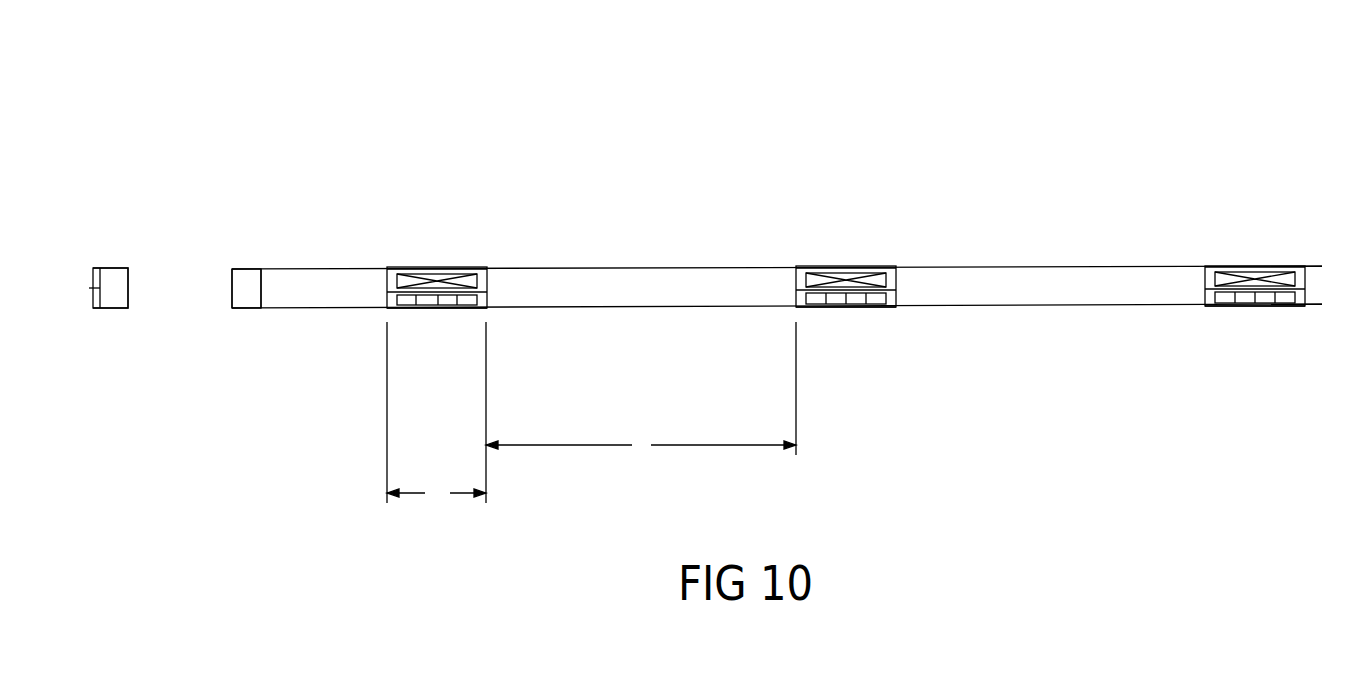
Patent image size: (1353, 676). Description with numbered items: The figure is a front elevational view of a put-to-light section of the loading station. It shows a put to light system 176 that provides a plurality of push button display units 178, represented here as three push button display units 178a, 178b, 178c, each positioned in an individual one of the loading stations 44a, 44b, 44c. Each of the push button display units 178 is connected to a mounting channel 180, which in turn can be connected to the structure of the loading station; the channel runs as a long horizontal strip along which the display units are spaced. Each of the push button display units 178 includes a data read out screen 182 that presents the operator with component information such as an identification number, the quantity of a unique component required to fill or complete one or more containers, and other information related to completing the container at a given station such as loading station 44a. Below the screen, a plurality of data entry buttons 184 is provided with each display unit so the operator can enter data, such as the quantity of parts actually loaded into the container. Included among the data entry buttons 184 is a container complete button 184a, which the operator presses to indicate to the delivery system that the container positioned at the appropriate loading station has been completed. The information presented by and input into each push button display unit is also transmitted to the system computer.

The put to light system 176 is at (800, 118).
The push button display units 178 is at (636, 166).
The push button display unit 178a is at (128, 288).
The push button display unit 178b is at (893, 283).
The push button display unit 178c is at (1208, 285).
The mounting channel 180 is at (112, 268).
The data read out screen 182 is at (408, 277).
The data entry buttons 184 is at (465, 308).
The container complete button 184a is at (482, 298).
The loading station 44a is at (448, 243).
The loading station 44b is at (857, 234).
The loading station 44c is at (1285, 237).